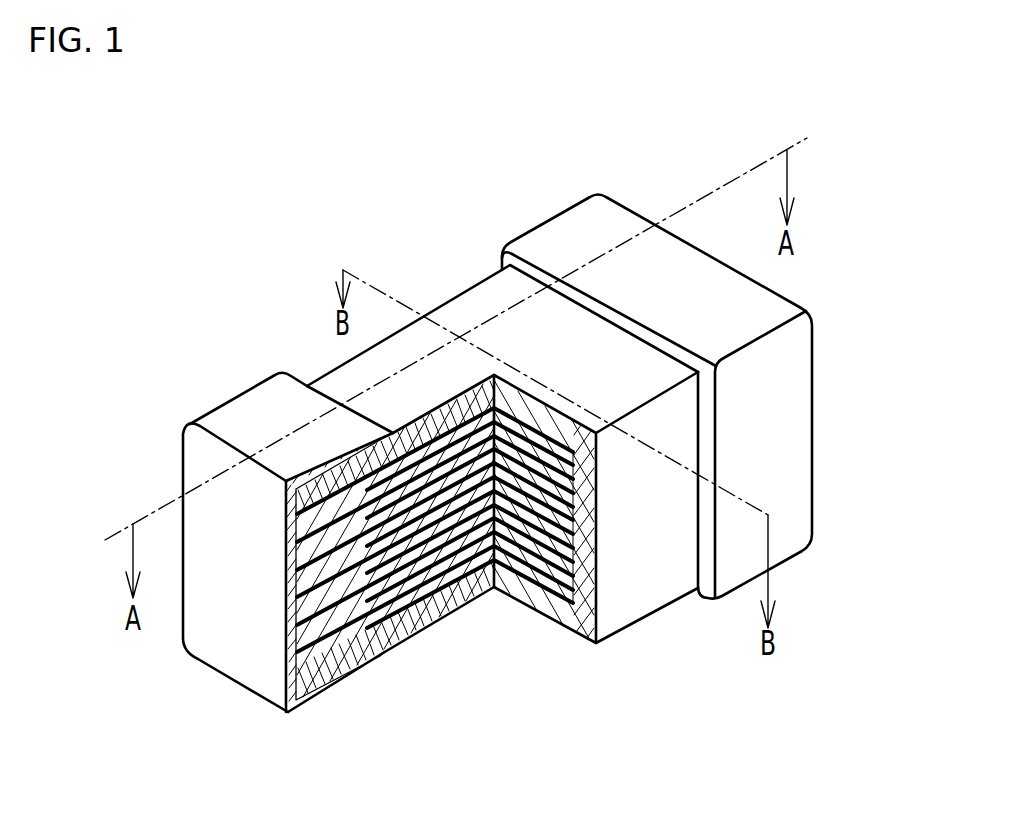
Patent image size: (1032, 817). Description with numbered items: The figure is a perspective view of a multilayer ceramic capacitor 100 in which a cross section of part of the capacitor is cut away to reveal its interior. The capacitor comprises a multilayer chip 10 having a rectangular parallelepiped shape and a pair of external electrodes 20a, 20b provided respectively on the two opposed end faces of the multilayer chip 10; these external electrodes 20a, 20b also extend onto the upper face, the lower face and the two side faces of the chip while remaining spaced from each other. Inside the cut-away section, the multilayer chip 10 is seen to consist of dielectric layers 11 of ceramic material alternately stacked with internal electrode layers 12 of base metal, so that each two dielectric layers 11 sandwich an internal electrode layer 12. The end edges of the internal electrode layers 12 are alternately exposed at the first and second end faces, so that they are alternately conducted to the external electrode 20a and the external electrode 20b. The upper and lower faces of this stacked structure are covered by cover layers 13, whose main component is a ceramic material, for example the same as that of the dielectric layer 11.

The multilayer ceramic capacitor 100 is at (915, 125).
The multilayer chip 10 is at (317, 361).
The dielectric layer 11 is at (455, 615).
The internal electrode layer 12 is at (405, 640).
The cover layer 13 is at (463, 313).
The external electrode 20a is at (210, 413).
The external electrode 20b is at (553, 237).